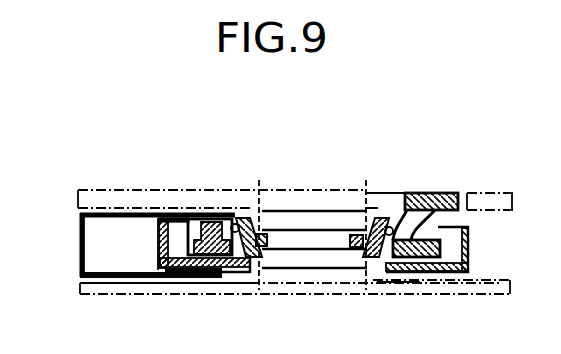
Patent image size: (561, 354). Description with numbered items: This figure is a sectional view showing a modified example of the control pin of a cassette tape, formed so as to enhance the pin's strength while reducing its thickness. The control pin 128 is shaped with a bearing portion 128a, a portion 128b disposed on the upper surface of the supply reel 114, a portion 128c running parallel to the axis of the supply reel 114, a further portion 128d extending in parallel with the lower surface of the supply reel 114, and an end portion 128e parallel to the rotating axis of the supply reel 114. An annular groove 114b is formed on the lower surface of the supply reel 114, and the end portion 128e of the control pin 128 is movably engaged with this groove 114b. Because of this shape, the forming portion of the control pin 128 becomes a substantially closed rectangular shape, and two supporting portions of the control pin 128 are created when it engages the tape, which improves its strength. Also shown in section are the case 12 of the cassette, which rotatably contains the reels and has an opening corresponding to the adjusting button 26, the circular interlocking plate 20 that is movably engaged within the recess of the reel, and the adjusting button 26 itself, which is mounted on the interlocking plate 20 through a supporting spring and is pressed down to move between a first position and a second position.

The case 12 is at (259, 190).
The interlocking plate 20 is at (415, 257).
The adjusting button 26 is at (437, 193).
The supply reel 114 is at (470, 238).
The annular groove 114b is at (432, 271).
The control pin 128 is at (102, 213).
The bearing portion 128a is at (202, 218).
The portion disposed on the upper surface of the supply reel 128b is at (148, 213).
The portion parallel to the axis of the supply reel 128c is at (82, 250).
The portion extending in parallel with the lower surface of the supply reel 128d is at (138, 283).
The end portion 128e is at (200, 268).